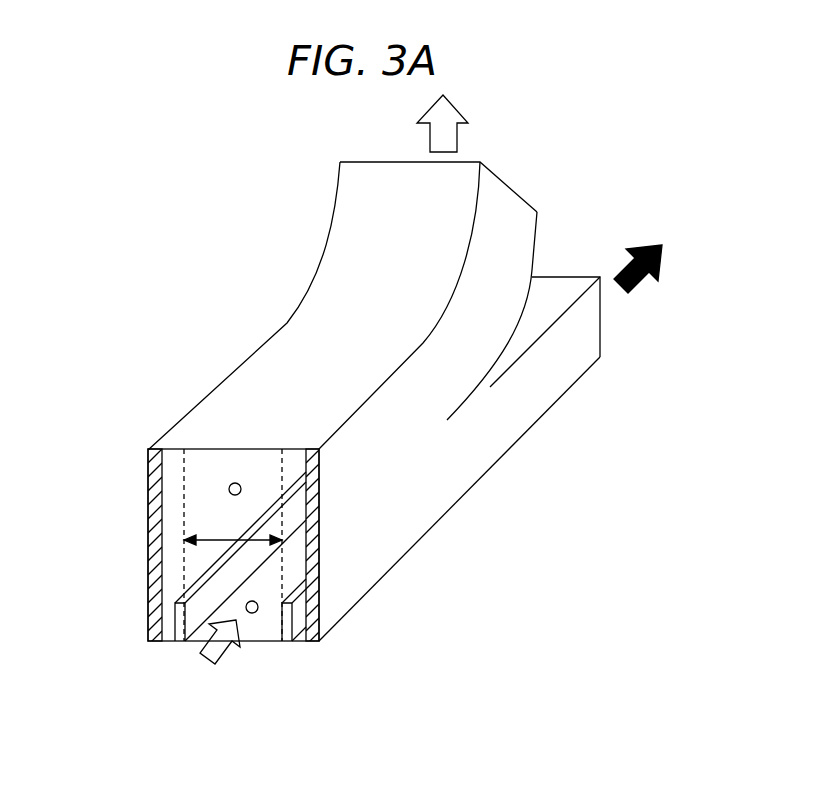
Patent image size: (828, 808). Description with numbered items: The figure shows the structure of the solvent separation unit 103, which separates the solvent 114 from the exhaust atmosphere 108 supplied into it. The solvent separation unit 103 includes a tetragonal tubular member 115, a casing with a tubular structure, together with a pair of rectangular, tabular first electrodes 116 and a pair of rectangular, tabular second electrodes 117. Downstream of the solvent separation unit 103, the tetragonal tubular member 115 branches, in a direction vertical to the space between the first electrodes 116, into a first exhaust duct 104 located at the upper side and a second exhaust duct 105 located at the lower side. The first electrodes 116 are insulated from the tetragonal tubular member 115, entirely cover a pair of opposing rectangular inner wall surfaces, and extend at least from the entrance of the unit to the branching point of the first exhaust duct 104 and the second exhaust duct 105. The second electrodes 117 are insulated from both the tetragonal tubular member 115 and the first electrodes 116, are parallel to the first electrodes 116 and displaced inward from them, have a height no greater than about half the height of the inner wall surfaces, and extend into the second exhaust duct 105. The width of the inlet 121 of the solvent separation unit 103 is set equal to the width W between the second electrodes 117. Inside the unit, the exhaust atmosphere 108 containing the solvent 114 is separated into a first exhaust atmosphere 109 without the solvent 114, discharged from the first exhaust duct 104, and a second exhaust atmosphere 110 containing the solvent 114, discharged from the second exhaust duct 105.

The solvent separation unit 103 is at (192, 283).
The first exhaust duct 104 is at (326, 234).
The second exhaust duct 105 is at (555, 387).
The exhaust atmosphere 108 is at (229, 648).
The first exhaust atmosphere 109 is at (459, 135).
The second exhaust atmosphere 110 is at (633, 288).
The solvent 114 is at (253, 601).
The tetragonal tubular member 115 is at (458, 498).
The first electrodes 116 is at (148, 540).
The second electrodes 117 is at (178, 642).
The inlet 121 is at (208, 477).
The width W is at (220, 540).